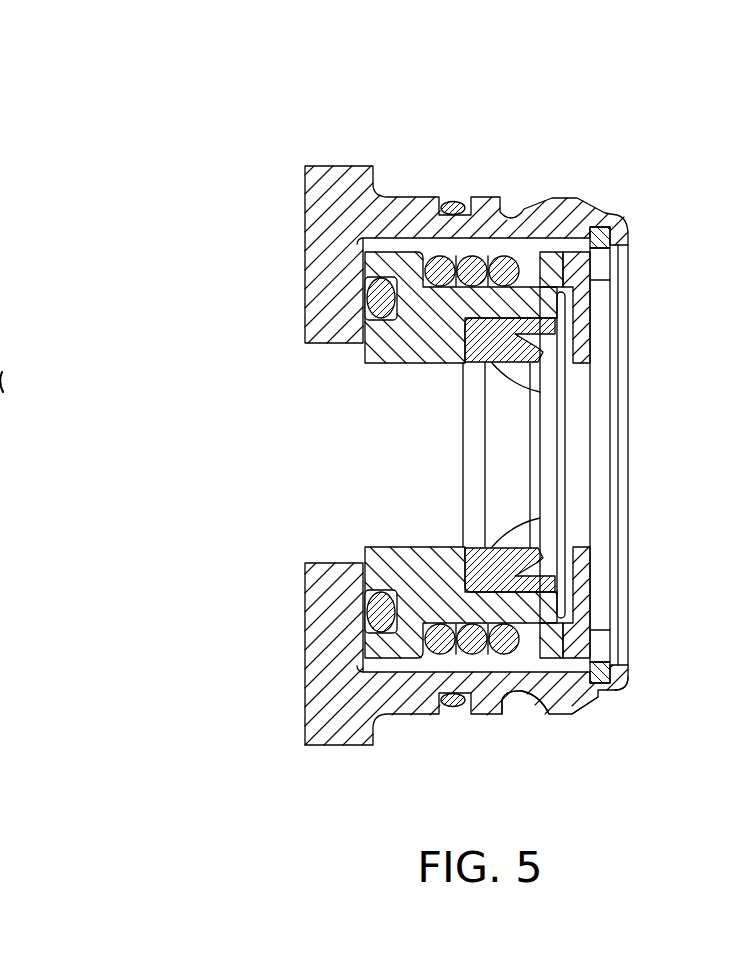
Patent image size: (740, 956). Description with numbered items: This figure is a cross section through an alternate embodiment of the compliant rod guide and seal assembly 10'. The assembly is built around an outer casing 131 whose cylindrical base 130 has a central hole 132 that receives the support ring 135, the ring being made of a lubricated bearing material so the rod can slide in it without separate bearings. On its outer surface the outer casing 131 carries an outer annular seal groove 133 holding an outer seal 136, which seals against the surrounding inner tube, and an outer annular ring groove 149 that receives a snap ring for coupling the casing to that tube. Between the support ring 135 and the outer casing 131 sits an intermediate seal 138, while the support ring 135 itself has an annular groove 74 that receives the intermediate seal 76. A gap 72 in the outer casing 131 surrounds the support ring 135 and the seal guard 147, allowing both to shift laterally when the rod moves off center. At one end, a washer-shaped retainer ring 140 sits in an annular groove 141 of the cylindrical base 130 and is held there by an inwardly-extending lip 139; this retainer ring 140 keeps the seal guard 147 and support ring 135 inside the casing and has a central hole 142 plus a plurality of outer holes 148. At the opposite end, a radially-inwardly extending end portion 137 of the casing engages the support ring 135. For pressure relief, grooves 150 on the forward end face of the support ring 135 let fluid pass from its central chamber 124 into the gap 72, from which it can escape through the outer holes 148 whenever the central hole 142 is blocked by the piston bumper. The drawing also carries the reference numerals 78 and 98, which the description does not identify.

The compliant rod guide and seal assembly 10' is at (198, 93).
The cylindrical base 130 is at (330, 168).
The outer casing 131 is at (568, 709).
The central hole 132 is at (398, 450).
The central chamber 124 is at (385, 522).
The outer annular seal groove 133 is at (452, 203).
The support ring 135 is at (410, 363).
The outer seal 136 is at (455, 702).
The radially-inwardly extending end portion 137 is at (322, 585).
The intermediate seal 138 is at (372, 608).
The inwardly-extending lip 139 is at (620, 681).
The retainer ring 140 is at (622, 655).
The annular groove 141 is at (600, 240).
The central hole 142 is at (600, 552).
The seal guard 147 is at (568, 653).
The outer holes 148 is at (600, 272).
The outer annular ring groove 149 is at (531, 694).
The grooves 150 is at (562, 455).
The gap 72 is at (438, 663).
The annular groove 74 is at (558, 342).
The intermediate seal 76 is at (522, 391).
The seal 78 is at (512, 550).
The ball bearing 98 is at (503, 262).